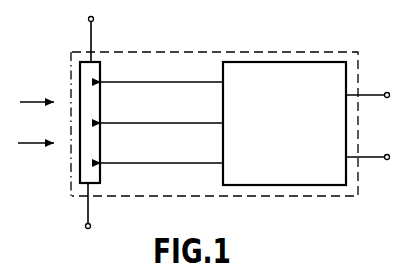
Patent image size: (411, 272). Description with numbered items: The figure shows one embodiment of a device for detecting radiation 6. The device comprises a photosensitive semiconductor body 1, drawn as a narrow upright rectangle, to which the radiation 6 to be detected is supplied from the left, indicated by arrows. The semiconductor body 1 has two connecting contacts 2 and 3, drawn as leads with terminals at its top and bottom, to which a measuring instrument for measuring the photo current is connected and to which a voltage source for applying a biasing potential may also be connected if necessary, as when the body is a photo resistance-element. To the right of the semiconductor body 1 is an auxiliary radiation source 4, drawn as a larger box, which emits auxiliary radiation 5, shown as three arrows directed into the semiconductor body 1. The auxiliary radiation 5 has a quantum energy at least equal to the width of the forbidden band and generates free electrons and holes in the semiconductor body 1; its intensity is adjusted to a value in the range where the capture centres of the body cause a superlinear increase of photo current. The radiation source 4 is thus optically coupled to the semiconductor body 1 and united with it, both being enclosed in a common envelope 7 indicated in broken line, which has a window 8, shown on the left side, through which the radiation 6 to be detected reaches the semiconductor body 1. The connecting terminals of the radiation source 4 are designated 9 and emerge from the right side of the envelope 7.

The photosensitive semiconductor body 1 is at (86, 167).
The connecting contact 2 is at (91, 210).
The connecting contact 3 is at (93, 38).
The auxiliary radiation source 4 is at (284, 172).
The auxiliary radiation 5 is at (183, 163).
The radiation to be detected 6 is at (40, 146).
The common envelope 7 is at (310, 52).
The window 8 is at (70, 150).
The connecting terminals 9 is at (371, 96).